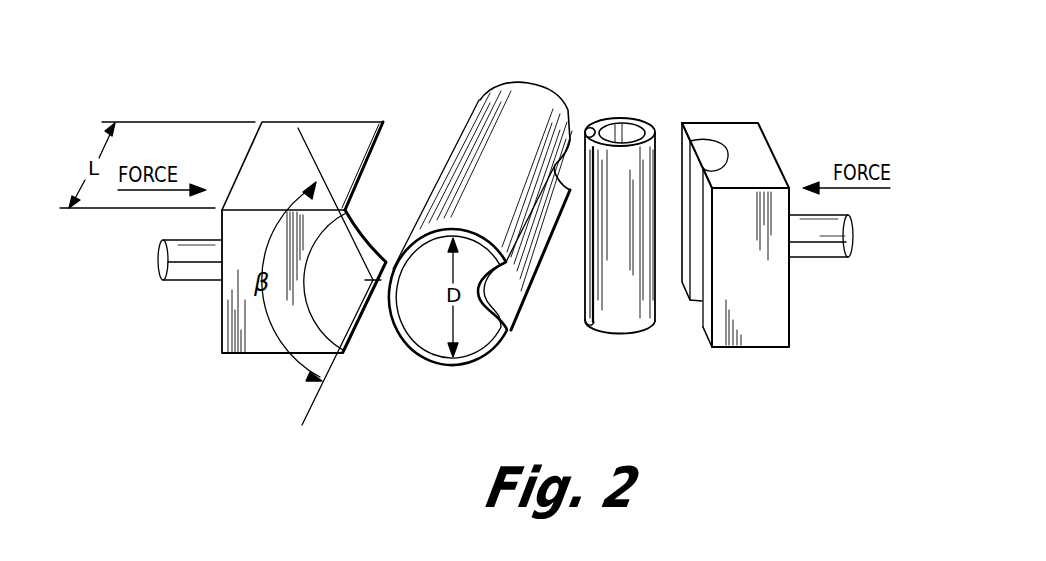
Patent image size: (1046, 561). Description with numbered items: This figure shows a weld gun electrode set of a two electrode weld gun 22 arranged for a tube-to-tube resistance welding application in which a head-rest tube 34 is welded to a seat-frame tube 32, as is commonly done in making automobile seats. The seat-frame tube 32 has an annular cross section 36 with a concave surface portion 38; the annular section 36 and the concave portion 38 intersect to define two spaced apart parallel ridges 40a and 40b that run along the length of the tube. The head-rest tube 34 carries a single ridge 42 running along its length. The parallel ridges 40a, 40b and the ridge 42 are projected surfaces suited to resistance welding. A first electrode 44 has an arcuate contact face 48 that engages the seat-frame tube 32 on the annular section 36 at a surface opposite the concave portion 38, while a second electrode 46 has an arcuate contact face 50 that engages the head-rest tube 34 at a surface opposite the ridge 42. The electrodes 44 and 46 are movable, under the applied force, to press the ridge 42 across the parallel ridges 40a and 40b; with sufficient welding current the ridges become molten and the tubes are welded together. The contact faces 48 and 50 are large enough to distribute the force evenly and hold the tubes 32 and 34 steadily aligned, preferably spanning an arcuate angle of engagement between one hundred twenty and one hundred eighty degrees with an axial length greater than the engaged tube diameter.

The weld gun 22 is at (850, 110).
The seat-frame tube 32 is at (530, 92).
The head-rest tube 34 is at (647, 153).
The annular cross section 36 is at (433, 170).
The concave surface portion 38 is at (498, 285).
The parallel ridge 40a is at (568, 110).
The parallel ridge 40b is at (502, 330).
The ridge 42 is at (588, 132).
The first electrode 44 is at (276, 130).
The second electrode 46 is at (752, 134).
The arcuate contact face 48 is at (333, 307).
The arcuate contact face 50 is at (707, 150).